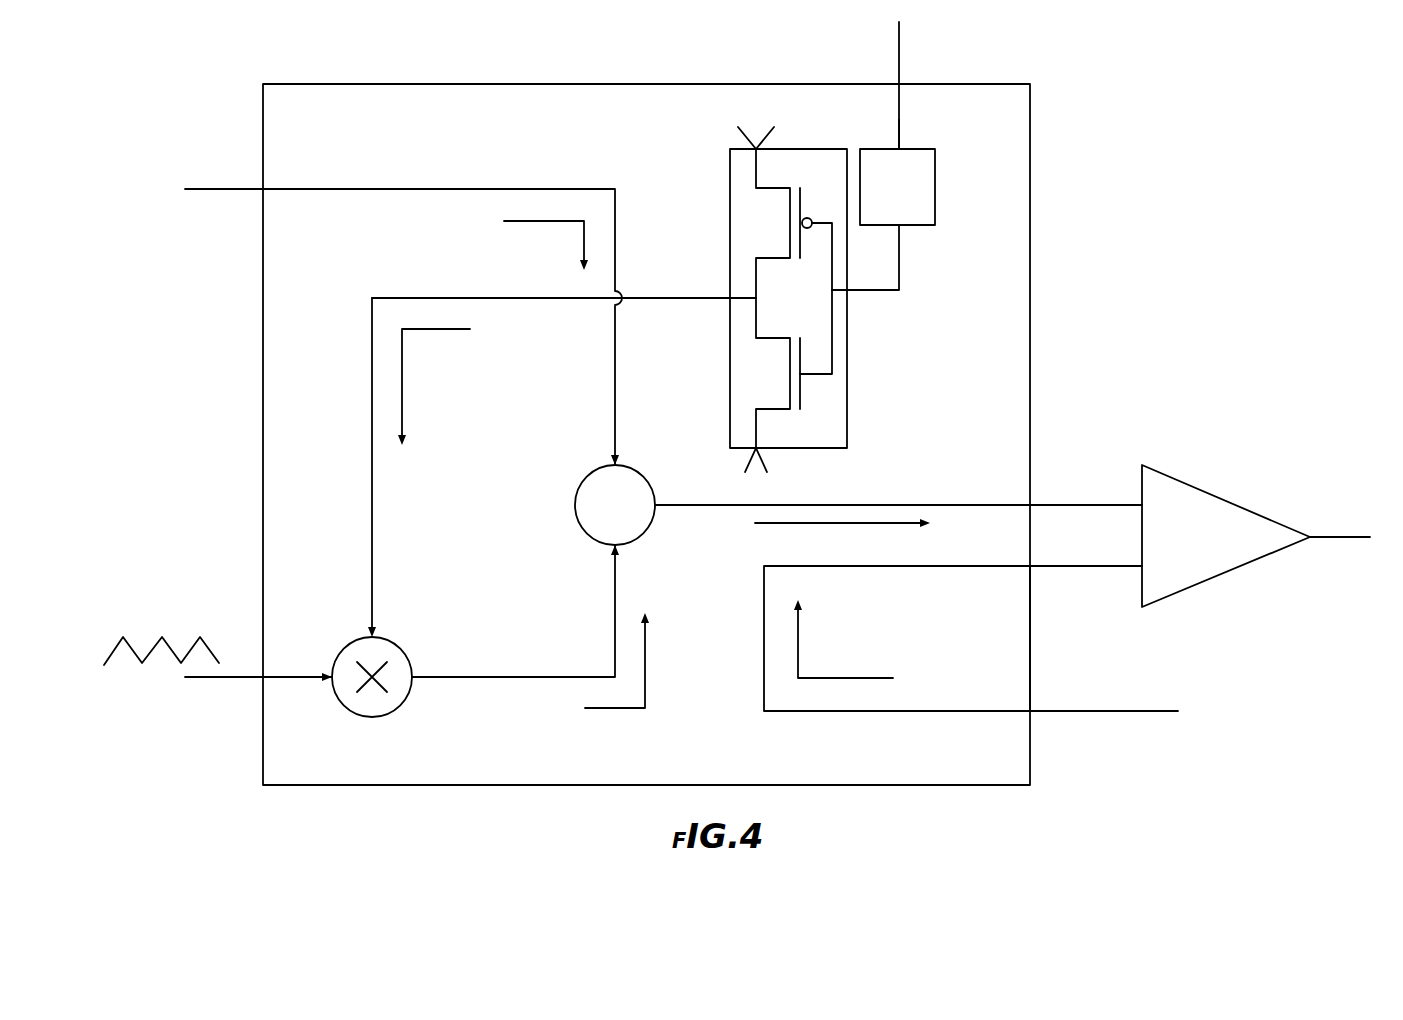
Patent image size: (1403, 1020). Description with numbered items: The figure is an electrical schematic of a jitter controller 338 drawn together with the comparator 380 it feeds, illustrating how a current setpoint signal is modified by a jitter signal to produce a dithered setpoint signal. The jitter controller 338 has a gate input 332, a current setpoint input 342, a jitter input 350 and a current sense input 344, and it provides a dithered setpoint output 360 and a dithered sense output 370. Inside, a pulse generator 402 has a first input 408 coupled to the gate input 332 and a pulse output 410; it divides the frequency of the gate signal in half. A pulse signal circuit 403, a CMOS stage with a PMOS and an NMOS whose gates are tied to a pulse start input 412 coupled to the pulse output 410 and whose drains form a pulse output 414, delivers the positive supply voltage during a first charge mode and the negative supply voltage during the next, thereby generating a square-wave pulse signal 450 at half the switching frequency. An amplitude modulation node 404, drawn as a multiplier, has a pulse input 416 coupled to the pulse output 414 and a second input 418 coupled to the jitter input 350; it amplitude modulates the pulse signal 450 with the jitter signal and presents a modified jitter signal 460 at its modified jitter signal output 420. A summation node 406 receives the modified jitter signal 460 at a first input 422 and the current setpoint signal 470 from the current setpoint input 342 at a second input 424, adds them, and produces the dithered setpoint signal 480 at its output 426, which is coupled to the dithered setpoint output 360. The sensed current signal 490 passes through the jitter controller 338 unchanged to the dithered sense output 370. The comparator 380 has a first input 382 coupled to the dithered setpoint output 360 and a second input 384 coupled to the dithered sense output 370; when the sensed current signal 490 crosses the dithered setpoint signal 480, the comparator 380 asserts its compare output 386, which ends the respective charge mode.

The gate input 332 is at (900, 83).
The jitter controller 338 is at (460, 155).
The current setpoint input 342 is at (262, 190).
The current sense input 344 is at (1032, 714).
The jitter input 350 is at (262, 678).
The dithered setpoint output 360 is at (1032, 503).
The dithered sense output 370 is at (1032, 568).
The comparator 380 is at (1220, 515).
The first input 382 is at (1140, 503).
The second input 384 is at (1140, 570).
The compare output 386 is at (1312, 536).
The pulse generator 402 is at (936, 194).
The pulse signal circuit 403 is at (848, 356).
The amplitude modulation node 404 is at (407, 660).
The summation node 406 is at (645, 536).
The first input 408 is at (900, 148).
The pulse output 410 is at (900, 227).
The pulse start input 412 is at (848, 291).
The pulse output 414 is at (730, 298).
The pulse input 416 is at (373, 637).
The second input 418 is at (330, 680).
The modified jitter signal output 420 is at (412, 680).
The first input 422 is at (612, 548).
The second input 424 is at (605, 460).
The output 426 is at (650, 490).
The pulse signal 450 is at (402, 362).
The modified jitter signal 460 is at (645, 655).
The current setpoint signal 470 is at (552, 222).
The dithered setpoint signal 480 is at (805, 524).
The sensed current signal 490 is at (865, 678).